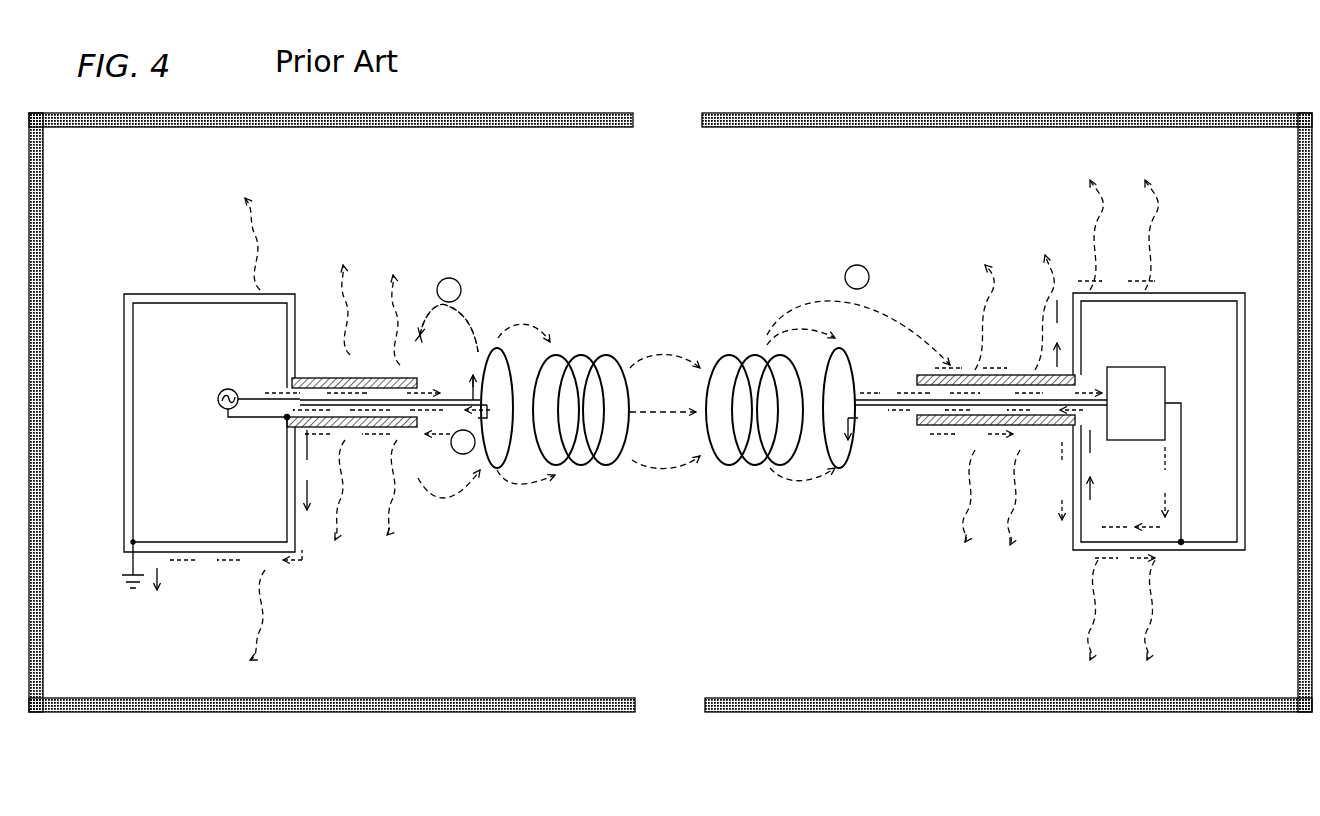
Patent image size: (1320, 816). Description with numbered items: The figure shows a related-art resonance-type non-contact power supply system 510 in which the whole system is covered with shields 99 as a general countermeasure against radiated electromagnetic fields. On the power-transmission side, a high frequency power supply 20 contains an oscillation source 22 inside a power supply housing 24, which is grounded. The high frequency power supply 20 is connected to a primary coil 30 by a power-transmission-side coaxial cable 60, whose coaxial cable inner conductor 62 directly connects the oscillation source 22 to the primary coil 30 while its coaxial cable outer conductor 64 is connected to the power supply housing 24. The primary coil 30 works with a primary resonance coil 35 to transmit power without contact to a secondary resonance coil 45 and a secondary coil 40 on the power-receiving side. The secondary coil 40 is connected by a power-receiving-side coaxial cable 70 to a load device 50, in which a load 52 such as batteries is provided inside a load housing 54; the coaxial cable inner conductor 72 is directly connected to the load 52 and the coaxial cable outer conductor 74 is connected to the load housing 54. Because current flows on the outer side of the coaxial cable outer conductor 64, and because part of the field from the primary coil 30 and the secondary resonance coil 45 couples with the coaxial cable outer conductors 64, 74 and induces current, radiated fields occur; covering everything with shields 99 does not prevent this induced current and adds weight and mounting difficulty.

The high frequency power supply 20 is at (170, 294).
The oscillation source 22 is at (218, 399).
The power supply housing 24 is at (124, 488).
The primary coil 30 is at (495, 468).
The primary resonance coil 35 is at (576, 465).
The secondary coil 40 is at (845, 468).
The secondary resonance coil 45 is at (748, 464).
The load device 50 is at (1228, 572).
The load 52 is at (1165, 372).
The load housing 54 is at (1212, 293).
The power-transmission-side coaxial cable 60 is at (362, 370).
The coaxial cable inner conductor 62 is at (322, 378).
The coaxial cable outer conductor 64 is at (345, 427).
The power-receiving-side coaxial cable 70 is at (1012, 370).
The coaxial cable inner conductor 72 is at (940, 377).
The coaxial cable outer conductor 74 is at (1032, 427).
The shields 99 is at (470, 712).
The resonance-type non-contact power supply system 510 is at (225, 216).